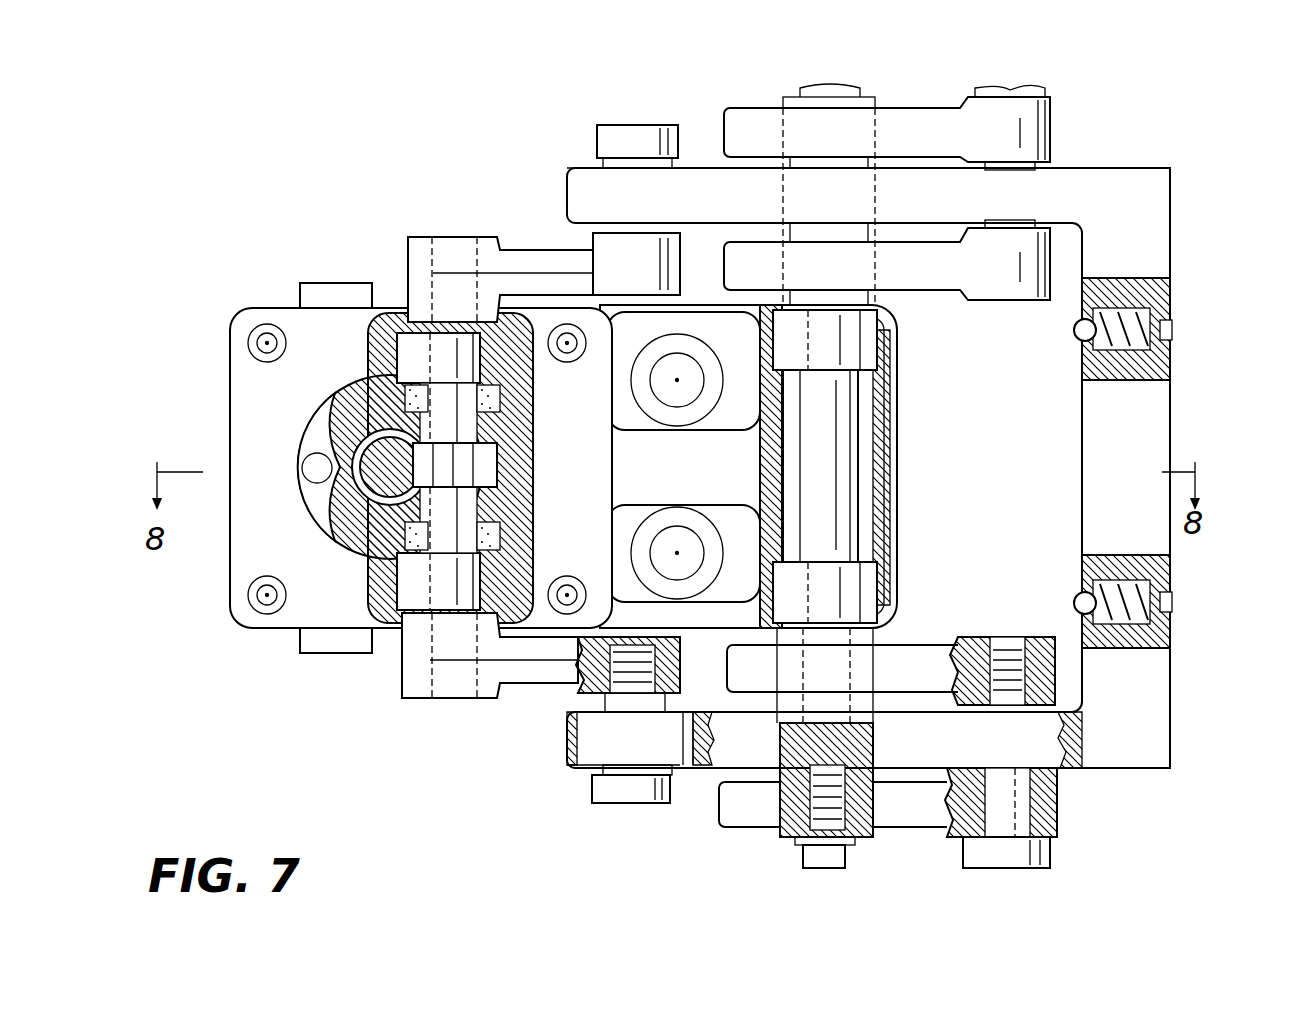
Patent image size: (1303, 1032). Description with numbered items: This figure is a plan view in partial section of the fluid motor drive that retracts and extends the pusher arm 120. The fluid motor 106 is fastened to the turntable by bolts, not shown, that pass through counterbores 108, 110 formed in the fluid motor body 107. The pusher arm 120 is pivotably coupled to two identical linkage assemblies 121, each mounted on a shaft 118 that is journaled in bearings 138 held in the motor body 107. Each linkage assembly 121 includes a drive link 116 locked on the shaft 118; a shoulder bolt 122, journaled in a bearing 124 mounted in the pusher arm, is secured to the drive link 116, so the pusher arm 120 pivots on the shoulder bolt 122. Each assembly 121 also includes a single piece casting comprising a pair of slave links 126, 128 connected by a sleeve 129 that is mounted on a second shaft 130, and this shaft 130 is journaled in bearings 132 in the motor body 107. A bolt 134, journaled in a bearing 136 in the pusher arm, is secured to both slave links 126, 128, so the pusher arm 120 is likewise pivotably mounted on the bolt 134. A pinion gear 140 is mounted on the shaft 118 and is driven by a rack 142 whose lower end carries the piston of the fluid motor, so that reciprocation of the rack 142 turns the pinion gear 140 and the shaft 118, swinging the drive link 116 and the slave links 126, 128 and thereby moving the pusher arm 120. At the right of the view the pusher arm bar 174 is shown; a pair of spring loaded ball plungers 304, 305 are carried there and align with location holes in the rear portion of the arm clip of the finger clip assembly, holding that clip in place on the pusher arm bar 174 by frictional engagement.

The fluid motor 106 is at (212, 364).
The fluid motor body 107 is at (884, 430).
The counterbore 108 is at (670, 520).
The counterbore 110 is at (647, 405).
The drive link 116 is at (541, 262).
The shaft 118 is at (430, 246).
The pusher arm 120 is at (752, 180).
The linkage assembly 121 is at (537, 160).
The shoulder bolt 122 is at (625, 125).
The bearing 124 is at (582, 760).
The slave link 126 is at (907, 140).
The slave link 128 is at (925, 302).
The sleeve 129 is at (776, 240).
The shaft 130 is at (853, 527).
The bearing 132 is at (880, 356).
The bolt 134 is at (1046, 97).
The bearing 136 is at (1063, 742).
The bearing 138 is at (400, 305).
The pinion gear 140 is at (492, 478).
The rack 142 is at (372, 462).
The pusher arm bar 174 is at (1166, 440).
The spring loaded ball plunger 304 is at (1184, 336).
The spring loaded ball plunger 305 is at (1170, 612).